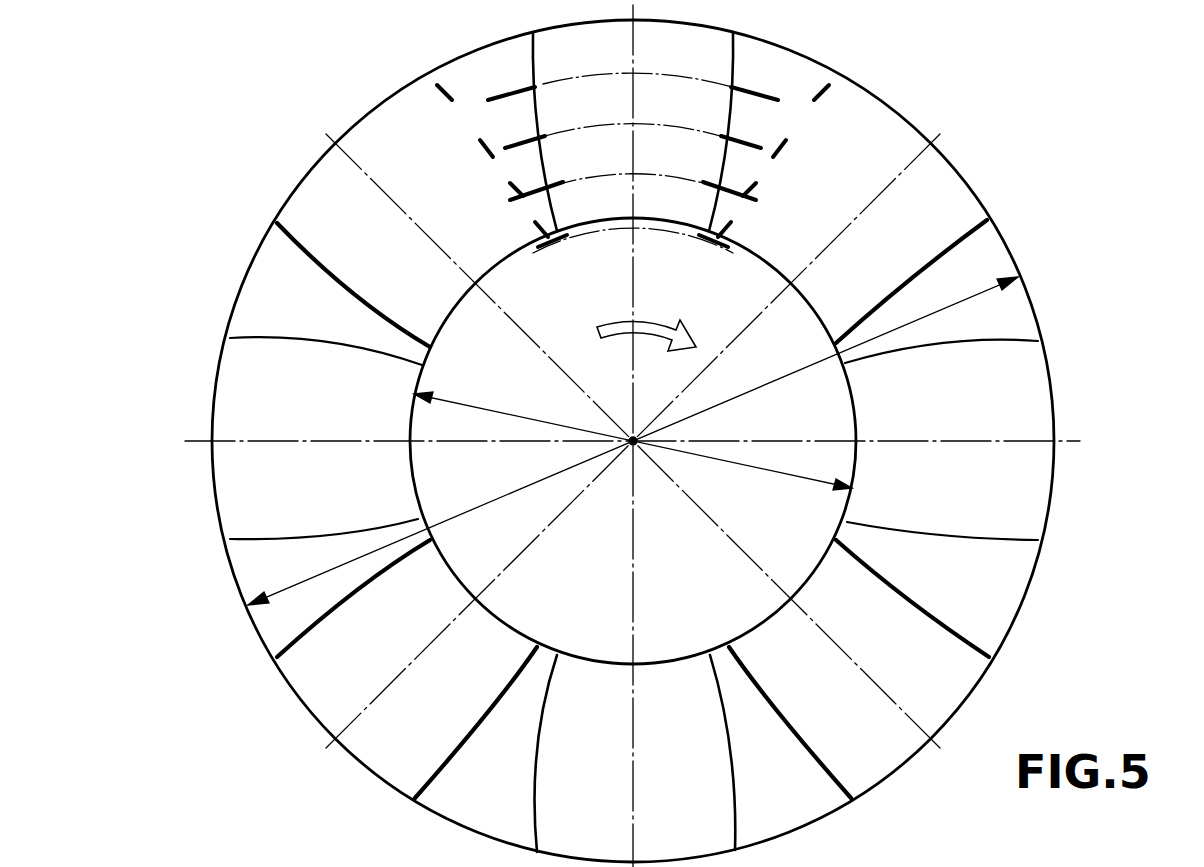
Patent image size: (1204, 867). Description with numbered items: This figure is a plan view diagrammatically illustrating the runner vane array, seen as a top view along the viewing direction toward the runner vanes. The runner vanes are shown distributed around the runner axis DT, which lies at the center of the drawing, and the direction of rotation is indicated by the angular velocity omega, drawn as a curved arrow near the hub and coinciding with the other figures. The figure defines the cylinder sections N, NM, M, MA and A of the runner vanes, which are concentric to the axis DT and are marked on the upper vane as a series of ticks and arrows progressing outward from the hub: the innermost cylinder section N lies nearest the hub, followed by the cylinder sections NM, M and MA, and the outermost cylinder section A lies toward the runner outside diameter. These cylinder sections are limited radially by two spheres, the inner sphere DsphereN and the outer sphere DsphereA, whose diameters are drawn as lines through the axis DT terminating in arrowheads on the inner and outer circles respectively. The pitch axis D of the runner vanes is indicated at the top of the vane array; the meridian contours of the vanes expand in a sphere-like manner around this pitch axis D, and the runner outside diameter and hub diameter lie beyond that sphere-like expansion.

The cylinder section A is at (493, 47).
The cylinder section MA is at (515, 128).
The cylinder section M is at (516, 143).
The cylinder section NM is at (533, 193).
The cylinder section N is at (550, 240).
The pitch axis D is at (632, 120).
The angular velocity omega is at (646, 342).
The axis DT is at (639, 446).
The sphere DsphereN is at (697, 455).
The sphere DsphereA is at (986, 288).